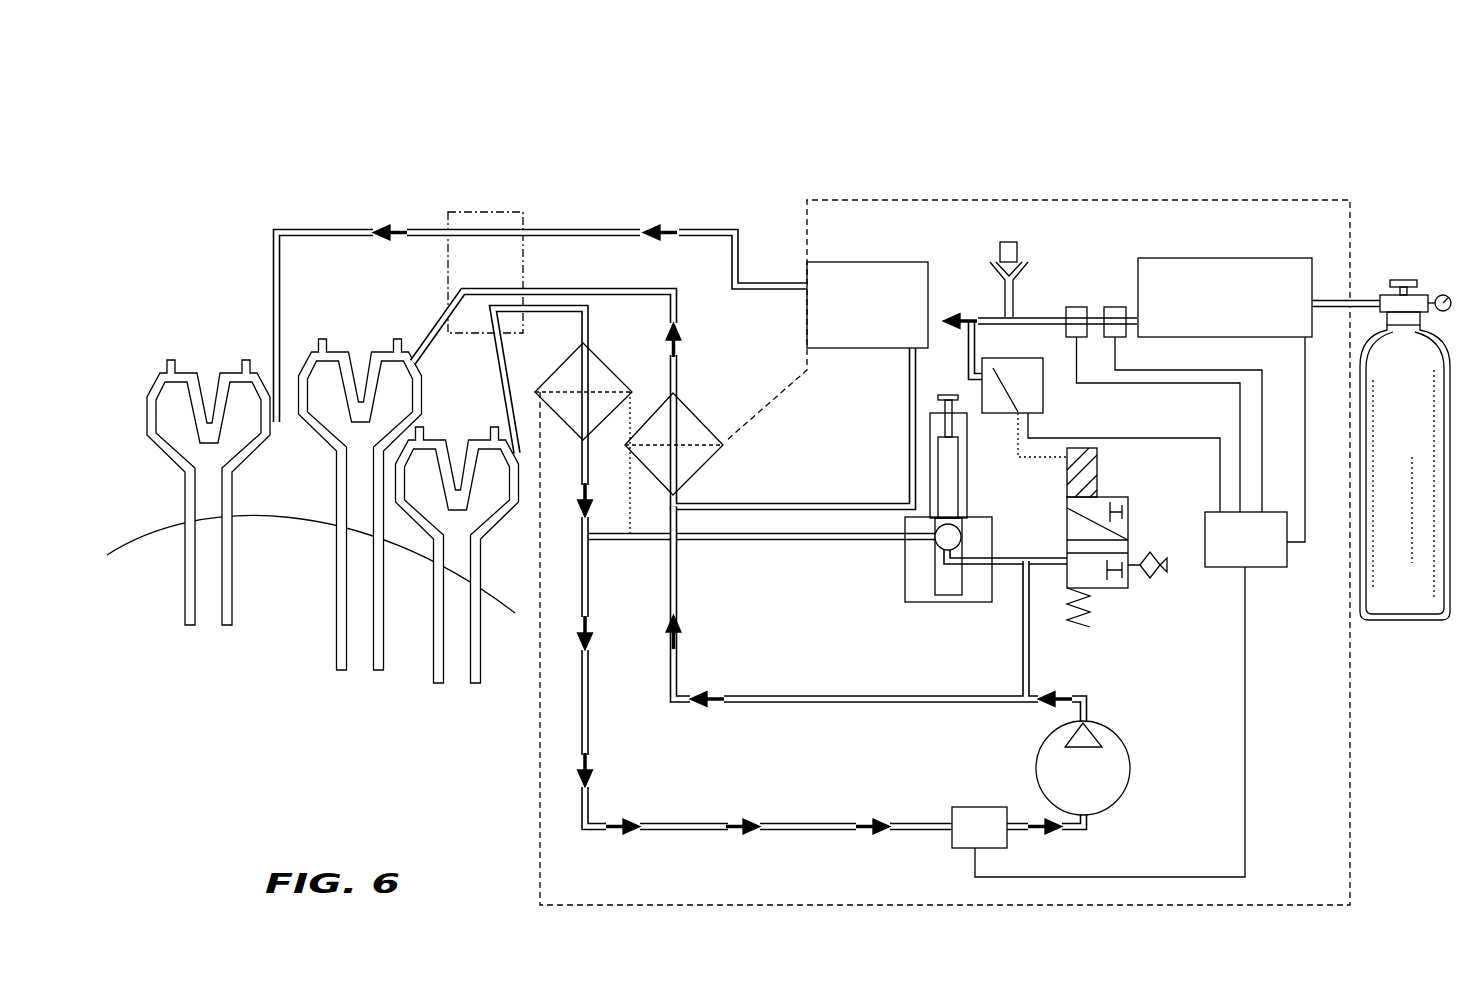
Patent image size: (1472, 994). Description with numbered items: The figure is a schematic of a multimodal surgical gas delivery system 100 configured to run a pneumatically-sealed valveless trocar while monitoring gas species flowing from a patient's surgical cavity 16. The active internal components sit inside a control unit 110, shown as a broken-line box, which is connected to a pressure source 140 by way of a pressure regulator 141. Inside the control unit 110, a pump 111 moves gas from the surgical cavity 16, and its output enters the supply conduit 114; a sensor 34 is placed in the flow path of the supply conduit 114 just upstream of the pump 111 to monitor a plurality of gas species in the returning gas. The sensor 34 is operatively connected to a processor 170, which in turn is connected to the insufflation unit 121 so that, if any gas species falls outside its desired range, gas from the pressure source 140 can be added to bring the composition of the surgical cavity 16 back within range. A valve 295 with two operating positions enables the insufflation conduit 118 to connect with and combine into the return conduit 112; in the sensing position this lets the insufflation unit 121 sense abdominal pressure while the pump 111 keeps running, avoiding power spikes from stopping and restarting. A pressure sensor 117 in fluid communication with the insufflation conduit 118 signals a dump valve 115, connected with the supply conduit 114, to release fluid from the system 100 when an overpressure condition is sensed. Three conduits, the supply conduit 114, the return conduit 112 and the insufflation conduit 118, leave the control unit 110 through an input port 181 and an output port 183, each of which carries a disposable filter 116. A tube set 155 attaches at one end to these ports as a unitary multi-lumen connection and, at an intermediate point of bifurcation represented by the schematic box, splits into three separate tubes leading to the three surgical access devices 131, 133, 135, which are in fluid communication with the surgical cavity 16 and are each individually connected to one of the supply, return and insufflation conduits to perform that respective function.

The gas delivery system 100 is at (1056, 103).
The control unit 110 is at (1293, 905).
The pump 111 is at (1130, 770).
The return conduit 112 is at (800, 705).
The supply conduit 114 is at (588, 735).
The dump valve 115 is at (1117, 590).
The disposable filter 116 is at (605, 430).
The pressure sensor 117 is at (1043, 362).
The insufflation conduit 118 is at (1093, 315).
The insufflation unit 121 is at (1225, 400).
The surgical access device 131 is at (180, 610).
The surgical access device 133 is at (335, 648).
The surgical access device 135 is at (432, 672).
The pressure source 140 is at (1405, 472).
The pressure regulator 141 is at (1422, 292).
The tube set 155 is at (470, 210).
The surgical cavity 16 is at (131, 566).
The processor 170 is at (1131, 694).
The input port 181 is at (622, 387).
The output port 183 is at (702, 421).
The valve 295 is at (930, 300).
The sensor 34 is at (960, 808).